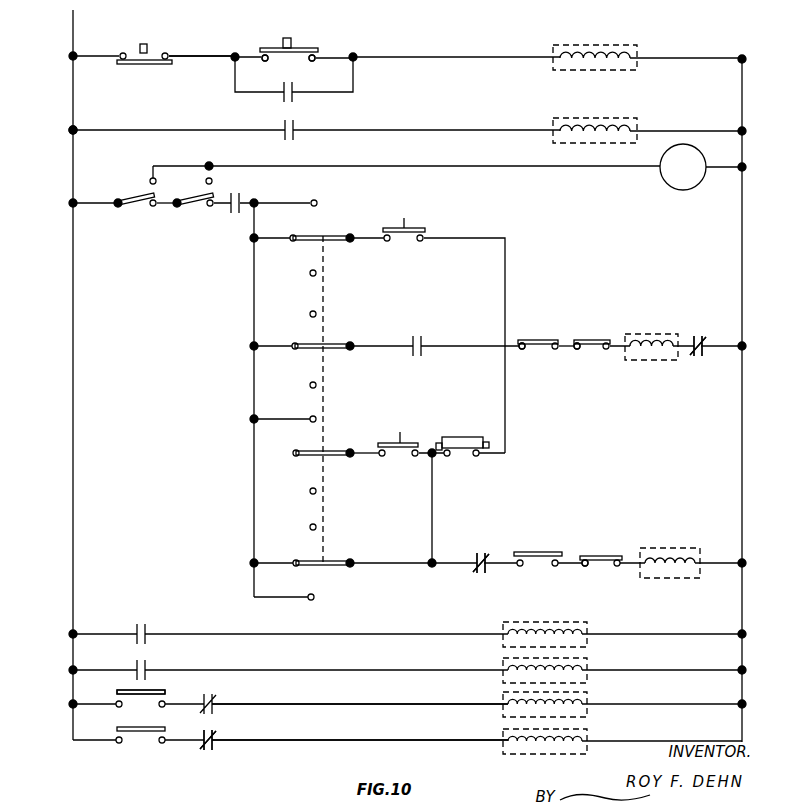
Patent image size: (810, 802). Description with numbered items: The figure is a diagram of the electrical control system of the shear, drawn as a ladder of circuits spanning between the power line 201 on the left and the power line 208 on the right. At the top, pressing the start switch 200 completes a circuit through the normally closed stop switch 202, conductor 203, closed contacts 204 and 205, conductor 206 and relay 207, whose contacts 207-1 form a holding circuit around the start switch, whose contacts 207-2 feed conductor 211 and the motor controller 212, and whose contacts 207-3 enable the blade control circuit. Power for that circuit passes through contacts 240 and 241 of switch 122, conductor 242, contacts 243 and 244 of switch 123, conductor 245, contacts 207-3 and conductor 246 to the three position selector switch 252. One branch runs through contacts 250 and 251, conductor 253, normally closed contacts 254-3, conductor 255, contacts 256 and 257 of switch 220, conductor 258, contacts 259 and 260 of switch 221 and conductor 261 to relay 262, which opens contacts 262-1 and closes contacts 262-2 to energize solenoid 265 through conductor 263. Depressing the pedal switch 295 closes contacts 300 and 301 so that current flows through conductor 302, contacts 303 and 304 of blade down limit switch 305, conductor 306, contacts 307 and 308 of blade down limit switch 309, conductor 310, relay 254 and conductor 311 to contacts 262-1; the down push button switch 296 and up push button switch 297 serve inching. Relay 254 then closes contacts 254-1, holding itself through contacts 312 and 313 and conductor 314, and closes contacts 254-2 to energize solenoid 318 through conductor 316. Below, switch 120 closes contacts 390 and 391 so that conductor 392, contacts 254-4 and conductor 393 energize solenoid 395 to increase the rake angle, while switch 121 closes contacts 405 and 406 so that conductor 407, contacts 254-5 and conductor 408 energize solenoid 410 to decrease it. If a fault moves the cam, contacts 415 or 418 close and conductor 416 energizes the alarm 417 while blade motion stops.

The power line 201 is at (73, 38).
The power line 208 is at (742, 56).
The stop switch 202 is at (144, 50).
The conductor 203 is at (207, 55).
The start switch 200 is at (291, 43).
The start switch contact 204 is at (268, 62).
The start switch contact 205 is at (311, 63).
The conductor 206 is at (464, 57).
The relay 207 is at (628, 45).
The relay contacts 207-1 is at (294, 104).
The relay contacts 207-2 is at (282, 120).
The relay contacts 207-3 is at (254, 212).
The conductor 211 is at (445, 131).
The motor controller 212 is at (612, 117).
The switch contact 415 is at (151, 177).
The switch contact 418 is at (210, 178).
The conductor 416 is at (401, 166).
The alarm 417 is at (677, 190).
The electric switch 122 is at (134, 194).
The electric switch 123 is at (192, 197).
The switch contact 240 is at (118, 203).
The switch contact 241 is at (143, 210).
The conductor 242 is at (154, 208).
The switch contact 243 is at (177, 205).
The switch contact 244 is at (212, 207).
The conductor 245 is at (243, 196).
The down push button switch 296 is at (419, 228).
The conductor 246 is at (254, 306).
The selector switch 252 is at (324, 387).
The selector switch contact 312 is at (293, 344).
The selector switch contact 313 is at (349, 345).
The conductor 314 is at (384, 344).
The relay contacts 254-1 is at (420, 339).
The conductor 302 is at (518, 342).
The limit switch contact 303 is at (523, 350).
The limit switch contact 304 is at (555, 350).
The blade down limit switch 305 is at (543, 340).
The conductor 306 is at (577, 343).
The limit switch contact 307 is at (577, 350).
The limit switch contact 308 is at (607, 350).
The blade down limit switch 309 is at (597, 340).
The conductor 310 is at (625, 335).
The relay 254 is at (634, 360).
The relay contacts 262-1 is at (700, 342).
The conductor 311 is at (692, 354).
The up push button switch 297 is at (397, 441).
The pedal switch 295 is at (470, 438).
The pedal switch contact 300 is at (450, 456).
The pedal switch contact 301 is at (480, 456).
The selector switch contact 250 is at (296, 566).
The selector switch contact 251 is at (344, 566).
The conductor 253 is at (416, 558).
The relay contacts 254-3 is at (478, 553).
The conductor 255 is at (482, 570).
The switch contact 256 is at (520, 566).
The switch contact 257 is at (556, 566).
The switch 220 is at (557, 552).
The conductor 258 is at (584, 560).
The switch 221 is at (606, 556).
The switch contact 259 is at (586, 566).
The switch contact 260 is at (618, 566).
The conductor 261 is at (640, 548).
The relay 262 is at (684, 578).
The relay contacts 254-2 is at (142, 624).
The conductor 316 is at (372, 630).
The solenoid 318 is at (584, 632).
The relay contacts 262-2 is at (146, 658).
The conductor 263 is at (397, 668).
The solenoid 265 is at (587, 669).
The electric switch 120 is at (118, 691).
The conductor 392 is at (185, 700).
The switch contact 390 is at (118, 706).
The switch contact 391 is at (164, 706).
The relay contacts 254-4 is at (224, 697).
The conductor 393 is at (418, 702).
The solenoid 395 is at (588, 705).
The electric switch 121 is at (139, 732).
The switch contact 405 is at (115, 742).
The switch contact 406 is at (162, 742).
The relay contacts 254-5 is at (226, 733).
The conductor 407 is at (205, 753).
The conductor 408 is at (427, 741).
The solenoid 410 is at (586, 742).